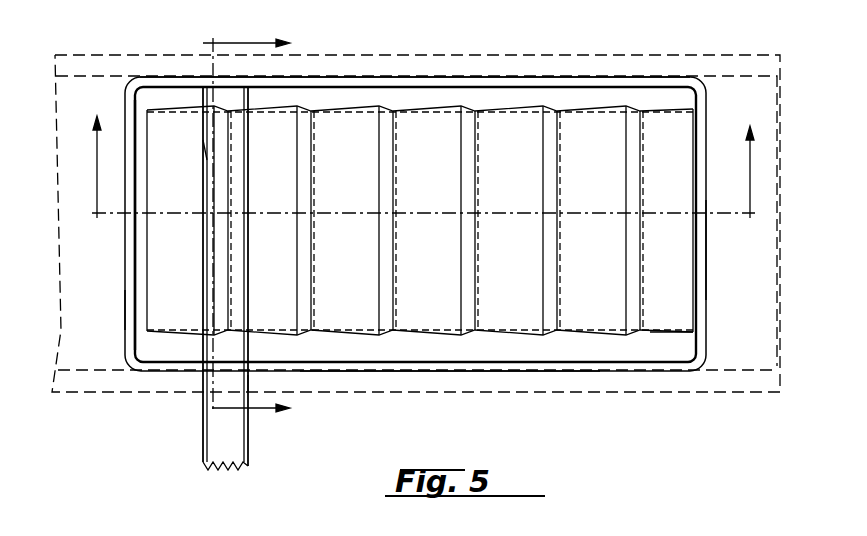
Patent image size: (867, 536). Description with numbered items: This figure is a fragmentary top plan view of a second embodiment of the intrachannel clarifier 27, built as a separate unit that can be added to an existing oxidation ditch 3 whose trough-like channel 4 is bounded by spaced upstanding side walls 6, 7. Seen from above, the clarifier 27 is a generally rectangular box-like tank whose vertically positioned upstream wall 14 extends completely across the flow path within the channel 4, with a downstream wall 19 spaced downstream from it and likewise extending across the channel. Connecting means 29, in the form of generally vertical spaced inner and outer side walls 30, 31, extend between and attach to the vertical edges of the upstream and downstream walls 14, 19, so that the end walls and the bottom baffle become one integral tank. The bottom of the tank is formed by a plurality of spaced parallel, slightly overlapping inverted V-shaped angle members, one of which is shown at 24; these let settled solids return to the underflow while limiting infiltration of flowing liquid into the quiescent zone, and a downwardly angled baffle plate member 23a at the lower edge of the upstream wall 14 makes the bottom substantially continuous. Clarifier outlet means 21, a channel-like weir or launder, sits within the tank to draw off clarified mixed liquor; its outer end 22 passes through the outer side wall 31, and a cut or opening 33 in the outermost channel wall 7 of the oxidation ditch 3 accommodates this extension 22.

The oxidation ditch 3 is at (700, 68).
The channel 4 is at (752, 272).
The side wall 6 is at (254, 225).
The side wall 7 is at (419, 167).
The upstream wall 14 is at (697, 123).
The downstream wall 19 is at (135, 245).
The clarifier outlet means 21 is at (210, 150).
The outer end 22 is at (203, 433).
The baffle plate member 23a is at (663, 320).
The angle member 24 is at (188, 274).
The intrachannel clarifier 27 is at (112, 309).
The connecting means 29 is at (412, 378).
The inner side wall 30 is at (420, 77).
The outer side wall 31 is at (478, 368).
The opening 33 is at (252, 383).